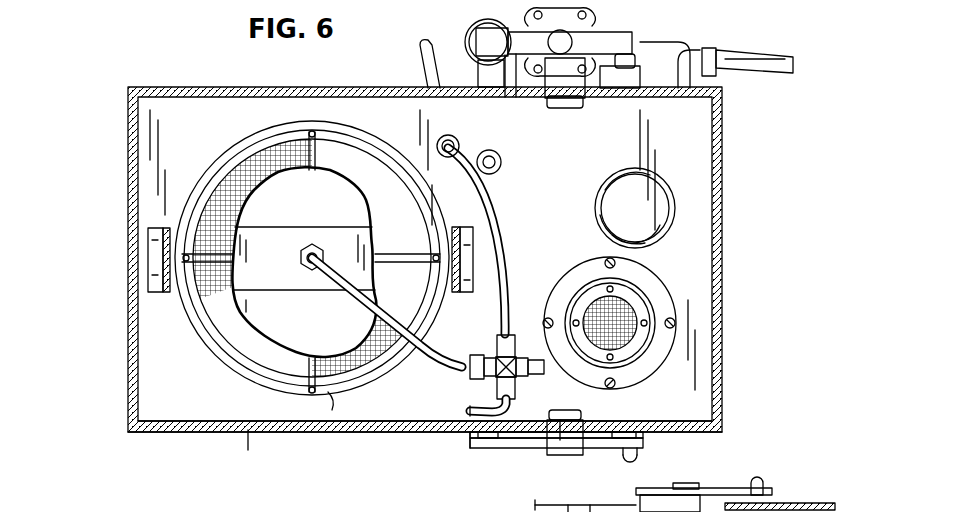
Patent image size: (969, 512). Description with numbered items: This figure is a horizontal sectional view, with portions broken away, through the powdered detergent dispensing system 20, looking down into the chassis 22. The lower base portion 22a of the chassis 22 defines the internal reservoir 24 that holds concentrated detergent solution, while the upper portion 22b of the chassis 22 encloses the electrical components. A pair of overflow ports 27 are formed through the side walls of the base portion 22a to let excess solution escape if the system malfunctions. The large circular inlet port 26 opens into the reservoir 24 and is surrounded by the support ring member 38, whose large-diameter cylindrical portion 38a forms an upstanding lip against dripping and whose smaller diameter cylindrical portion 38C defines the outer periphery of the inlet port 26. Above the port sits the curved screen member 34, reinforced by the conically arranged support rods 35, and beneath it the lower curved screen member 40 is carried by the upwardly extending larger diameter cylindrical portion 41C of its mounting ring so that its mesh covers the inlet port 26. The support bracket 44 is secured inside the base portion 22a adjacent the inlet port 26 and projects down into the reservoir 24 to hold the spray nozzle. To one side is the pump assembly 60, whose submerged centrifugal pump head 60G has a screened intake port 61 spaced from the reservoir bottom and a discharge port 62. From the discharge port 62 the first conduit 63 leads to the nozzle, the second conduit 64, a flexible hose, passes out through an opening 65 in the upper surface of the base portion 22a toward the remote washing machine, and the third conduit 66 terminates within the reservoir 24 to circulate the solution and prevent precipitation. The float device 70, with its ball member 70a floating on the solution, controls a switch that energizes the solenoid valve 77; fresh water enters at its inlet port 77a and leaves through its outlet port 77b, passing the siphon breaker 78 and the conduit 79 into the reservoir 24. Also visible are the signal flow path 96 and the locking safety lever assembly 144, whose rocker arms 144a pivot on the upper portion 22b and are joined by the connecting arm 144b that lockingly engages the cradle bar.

The powdered detergent dispensing system 20 is at (771, 151).
The chassis 22 is at (126, 394).
The lower base portion 22a is at (167, 433).
The upper portion 22b is at (809, 503).
The reservoir 24 is at (220, 422).
The inlet port 26 is at (237, 336).
The overflow ports 27 is at (578, 108).
The curved screen member 34 is at (257, 352).
The support rods 35 is at (318, 142).
The support ring member 38 is at (311, 406).
The large-diameter cylindrical portion 38a is at (535, 506).
The smaller diameter cylindrical portion 38C is at (333, 396).
The lower curved screen member 40 is at (351, 203).
The upwardly extending larger diameter cylindrical portion 41C is at (592, 492).
The support bracket 44 is at (160, 258).
The pump assembly 60 is at (683, 301).
The centrifugal pump head 60G is at (672, 323).
The screened intake port 61 is at (618, 312).
The discharge port 62 is at (531, 376).
The first conduit 63 is at (360, 305).
The second conduit 64 is at (499, 258).
The opening 65 is at (456, 142).
The third conduit 66 is at (468, 412).
The float device 70 is at (590, 229).
The ball member 70a is at (603, 206).
The solenoid valve 77 is at (598, 21).
The inlet port 77a is at (634, 42).
The outlet port 77b is at (508, 99).
The siphon breaker 78 is at (466, 37).
The conduit 79 is at (502, 162).
The signal flow path 96 is at (776, 53).
The locking safety lever assembly 144 is at (485, 450).
The rocker arms 144a is at (648, 88).
The connecting arm 144b is at (470, 447).